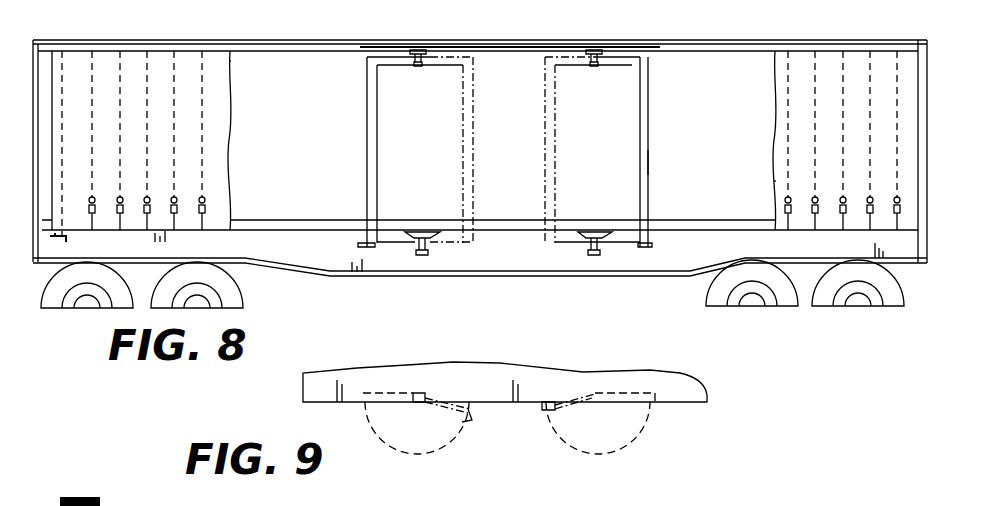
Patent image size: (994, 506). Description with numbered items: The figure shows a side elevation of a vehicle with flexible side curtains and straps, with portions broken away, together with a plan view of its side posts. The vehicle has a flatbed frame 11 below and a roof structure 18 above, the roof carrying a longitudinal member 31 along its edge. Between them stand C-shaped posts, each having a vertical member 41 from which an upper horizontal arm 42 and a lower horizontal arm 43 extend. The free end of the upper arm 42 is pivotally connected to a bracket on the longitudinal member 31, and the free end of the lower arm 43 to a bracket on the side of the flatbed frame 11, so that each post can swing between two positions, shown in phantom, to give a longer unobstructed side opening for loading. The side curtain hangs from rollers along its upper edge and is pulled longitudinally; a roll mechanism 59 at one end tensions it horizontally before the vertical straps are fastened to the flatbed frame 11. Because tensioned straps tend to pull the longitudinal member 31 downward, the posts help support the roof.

In FIG. 8, the flatbed frame 11 is at (310, 253).
In FIG. 9, the roof structure 18 is at (655, 383).
In FIG. 8, the longitudinal member 31 is at (549, 40).
In FIG. 8, the vertical member 41 is at (648, 163).
In FIG. 8, the upper horizontal arm 42 is at (632, 65).
In FIG. 8, the lower horizontal arm 43 is at (622, 245).
In FIG. 8, the roll mechanism 59 is at (57, 62).